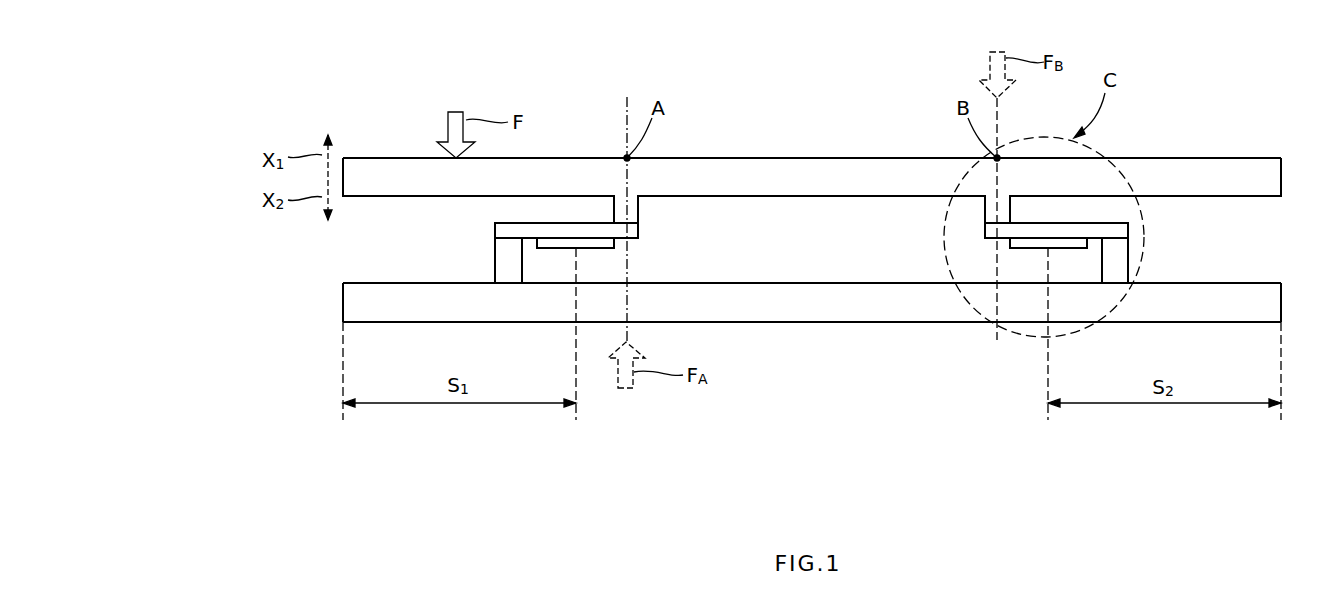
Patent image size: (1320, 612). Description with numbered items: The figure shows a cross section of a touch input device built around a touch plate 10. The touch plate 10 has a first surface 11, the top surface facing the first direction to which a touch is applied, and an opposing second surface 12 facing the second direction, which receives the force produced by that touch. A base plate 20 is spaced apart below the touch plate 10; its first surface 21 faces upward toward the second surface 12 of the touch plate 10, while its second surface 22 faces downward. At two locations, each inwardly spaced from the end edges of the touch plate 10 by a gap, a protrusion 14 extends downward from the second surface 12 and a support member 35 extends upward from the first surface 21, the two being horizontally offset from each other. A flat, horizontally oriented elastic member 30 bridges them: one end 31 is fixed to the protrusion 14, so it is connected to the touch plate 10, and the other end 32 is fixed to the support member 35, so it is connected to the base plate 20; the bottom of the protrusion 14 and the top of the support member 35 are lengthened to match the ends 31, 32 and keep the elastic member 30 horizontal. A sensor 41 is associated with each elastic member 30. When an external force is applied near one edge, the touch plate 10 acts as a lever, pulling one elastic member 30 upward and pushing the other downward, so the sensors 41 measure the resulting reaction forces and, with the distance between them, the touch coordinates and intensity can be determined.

The touch plate 10 is at (812, 172).
The first surface 11 is at (812, 158).
The second surface 12 is at (825, 196).
The protrusion 14 is at (638, 207).
The base plate 20 is at (812, 301).
The first surface 21 is at (757, 283).
The second surface 22 is at (882, 322).
The elastic member 30 is at (813, 228).
The one end of elastic member 31 is at (638, 233).
The other end of elastic member 32 is at (495, 228).
The support member 35 is at (495, 262).
The sensor 41 is at (550, 243).